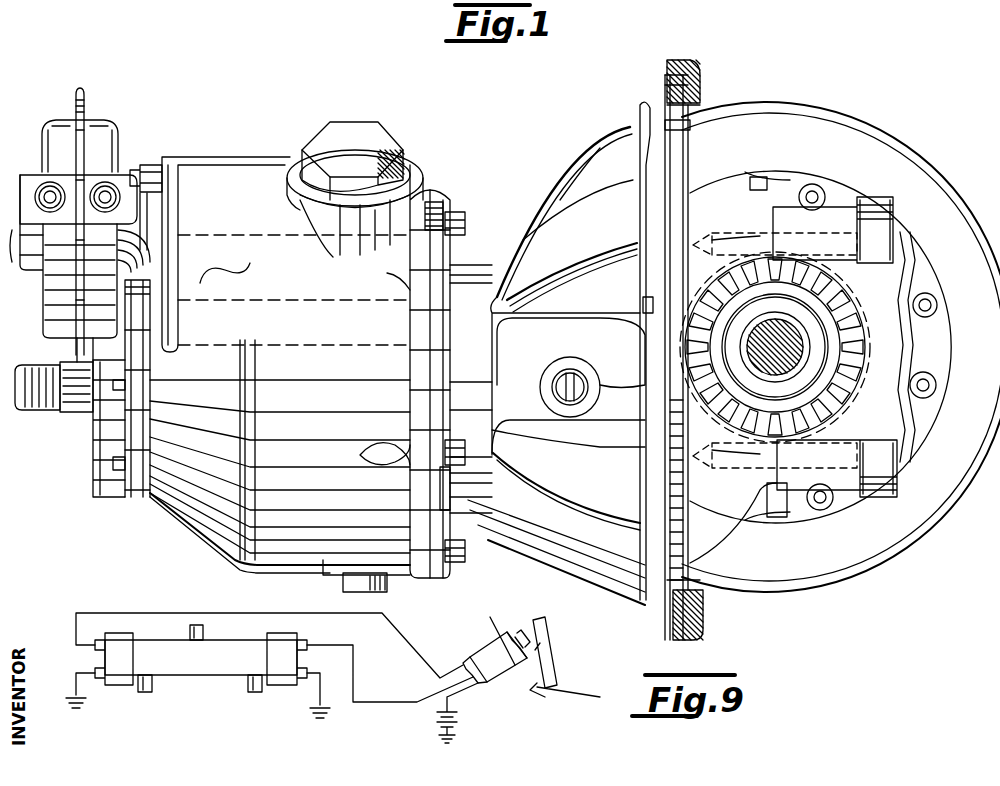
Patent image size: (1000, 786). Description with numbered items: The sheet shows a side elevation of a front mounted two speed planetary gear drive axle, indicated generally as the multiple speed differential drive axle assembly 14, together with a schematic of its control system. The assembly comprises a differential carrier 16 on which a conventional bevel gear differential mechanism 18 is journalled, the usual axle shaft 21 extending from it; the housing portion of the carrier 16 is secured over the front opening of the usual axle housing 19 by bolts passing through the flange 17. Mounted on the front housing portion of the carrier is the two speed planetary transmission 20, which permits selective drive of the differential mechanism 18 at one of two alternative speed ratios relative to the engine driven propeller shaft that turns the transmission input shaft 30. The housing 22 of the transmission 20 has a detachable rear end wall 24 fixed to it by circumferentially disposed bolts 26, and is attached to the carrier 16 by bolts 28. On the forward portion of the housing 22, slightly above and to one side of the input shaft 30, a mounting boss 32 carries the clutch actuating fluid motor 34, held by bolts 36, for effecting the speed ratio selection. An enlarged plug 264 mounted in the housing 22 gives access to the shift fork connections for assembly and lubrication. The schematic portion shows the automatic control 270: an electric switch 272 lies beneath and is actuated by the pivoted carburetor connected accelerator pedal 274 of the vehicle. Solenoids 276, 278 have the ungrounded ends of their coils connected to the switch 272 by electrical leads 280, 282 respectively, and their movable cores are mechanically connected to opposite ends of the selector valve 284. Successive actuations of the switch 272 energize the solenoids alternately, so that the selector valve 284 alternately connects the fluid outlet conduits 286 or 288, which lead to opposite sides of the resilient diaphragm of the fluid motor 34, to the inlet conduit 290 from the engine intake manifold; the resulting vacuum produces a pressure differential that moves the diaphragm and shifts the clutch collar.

In FIG. 1, the multiple speed differential drive axle assembly 14 is at (537, 172).
In FIG. 1, the differential carrier 16 is at (605, 150).
In FIG. 1, the flange 17 is at (658, 620).
In FIG. 1, the bevel gear differential mechanism 18 is at (893, 128).
In FIG. 1, the axle housing 19 is at (700, 635).
In FIG. 1, the two speed planetary transmission 20 is at (265, 180).
In FIG. 1, the axle shaft 21 is at (760, 332).
In FIG. 1, the housing 22 is at (207, 507).
In FIG. 1, the rear end wall 24 is at (438, 580).
In FIG. 1, the bolts 26 is at (457, 226).
In FIG. 1, the bolts 28 is at (460, 448).
In FIG. 1, the transmission input shaft 30 is at (50, 412).
In FIG. 1, the mounting boss 32 is at (205, 160).
In FIG. 1, the clutch actuating fluid motor 34 is at (62, 112).
In FIG. 1, the bolts 36 is at (150, 160).
In FIG. 1, the plug 264 is at (380, 108).
In FIG. 9, the automatic control 270 is at (218, 600).
In FIG. 9, the electric switch 272 is at (487, 645).
In FIG. 9, the accelerator pedal 274 is at (553, 637).
In FIG. 9, the solenoid 276 is at (124, 640).
In FIG. 9, the solenoid 278 is at (285, 640).
In FIG. 9, the electrical lead 280 is at (308, 600).
In FIG. 9, the electrical lead 282 is at (372, 640).
In FIG. 9, the selector valve 284 is at (200, 672).
In FIG. 9, the fluid outlet conduit 286 is at (156, 690).
In FIG. 9, the fluid outlet conduit 288 is at (246, 690).
In FIG. 9, the inlet conduit 290 is at (203, 633).